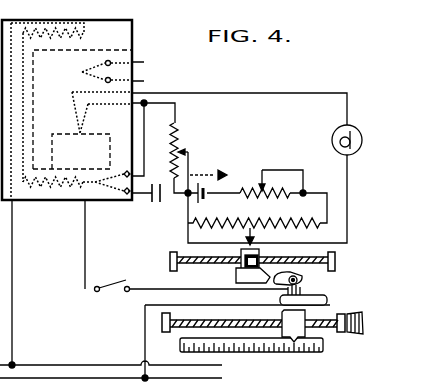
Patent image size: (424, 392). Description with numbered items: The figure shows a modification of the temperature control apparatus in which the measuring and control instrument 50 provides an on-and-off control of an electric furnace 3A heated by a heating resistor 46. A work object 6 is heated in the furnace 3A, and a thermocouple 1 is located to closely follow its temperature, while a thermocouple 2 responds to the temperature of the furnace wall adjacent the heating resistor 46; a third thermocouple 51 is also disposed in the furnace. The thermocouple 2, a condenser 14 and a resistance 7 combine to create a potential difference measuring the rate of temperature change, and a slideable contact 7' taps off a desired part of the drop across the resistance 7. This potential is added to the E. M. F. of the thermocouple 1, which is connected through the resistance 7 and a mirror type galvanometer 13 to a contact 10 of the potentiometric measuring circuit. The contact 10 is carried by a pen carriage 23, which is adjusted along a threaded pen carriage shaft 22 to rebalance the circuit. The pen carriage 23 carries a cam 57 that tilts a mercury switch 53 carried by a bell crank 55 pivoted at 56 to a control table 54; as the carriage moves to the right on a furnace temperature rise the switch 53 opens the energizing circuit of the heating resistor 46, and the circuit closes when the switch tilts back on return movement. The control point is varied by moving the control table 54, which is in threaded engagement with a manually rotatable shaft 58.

The electric furnace 3A is at (120, 39).
The heating resistor 46 is at (55, 199).
The thermocouple 2 is at (118, 201).
The thermocouple 1 is at (78, 131).
The thermocouple 51 is at (94, 69).
The resistance 7 is at (189, 149).
The contact 7' is at (202, 156).
The condenser 14 is at (154, 204).
The work object 6 is at (255, 223).
The contact 10 is at (250, 222).
The galvanometer 13 is at (336, 129).
The pen carriage shaft 22 is at (185, 257).
The pen carriage 23 is at (263, 262).
The cam 57 is at (235, 277).
The bell crank 55 is at (300, 276).
The pivot 56 is at (304, 288).
The mercury switch 53 is at (281, 299).
The measuring and control instrument 50 is at (354, 281).
The manually rotatable shaft 58 is at (185, 330).
The control table 54 is at (306, 314).